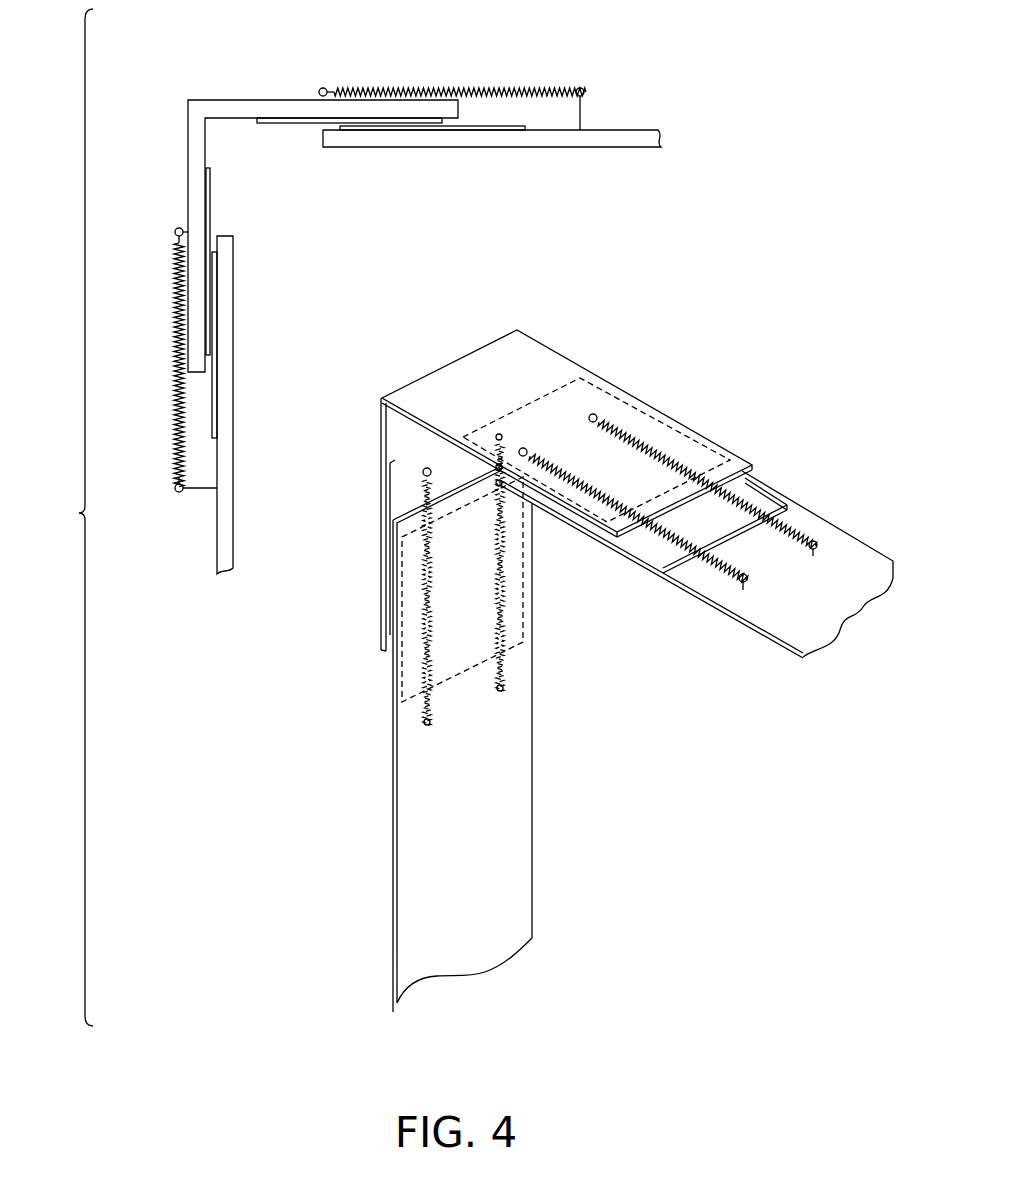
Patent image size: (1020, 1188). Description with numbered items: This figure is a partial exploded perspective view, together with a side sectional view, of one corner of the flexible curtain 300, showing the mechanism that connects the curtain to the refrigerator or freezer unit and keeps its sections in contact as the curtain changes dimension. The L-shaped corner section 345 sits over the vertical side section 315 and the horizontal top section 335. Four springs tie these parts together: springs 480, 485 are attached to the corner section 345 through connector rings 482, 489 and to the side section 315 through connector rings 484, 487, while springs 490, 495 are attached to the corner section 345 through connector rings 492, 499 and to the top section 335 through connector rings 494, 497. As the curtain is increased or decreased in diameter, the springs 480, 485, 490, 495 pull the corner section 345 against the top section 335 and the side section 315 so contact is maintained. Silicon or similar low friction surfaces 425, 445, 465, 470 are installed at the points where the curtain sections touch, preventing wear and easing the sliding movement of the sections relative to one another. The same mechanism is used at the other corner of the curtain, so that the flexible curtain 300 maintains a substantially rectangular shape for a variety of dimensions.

The flexible curtain 300 is at (65, 517).
The side section 315 is at (215, 565).
The top section 335 is at (643, 150).
The corner section 345 is at (188, 100).
The low friction surface 425 is at (215, 402).
The low friction surface 445 is at (490, 130).
The low friction surface 465 is at (210, 200).
The low friction surface 470 is at (299, 125).
The spring 480 is at (173, 345).
The connector ring 482 is at (175, 230).
The connector ring 484 is at (175, 492).
The spring 485 is at (503, 593).
The connector ring 487 is at (505, 687).
The connector ring 489 is at (497, 432).
The spring 490 is at (452, 88).
The connector ring 492 is at (320, 88).
The connector ring 494 is at (585, 88).
The spring 495 is at (677, 465).
The connector ring 497 is at (818, 541).
The connector ring 499 is at (593, 414).